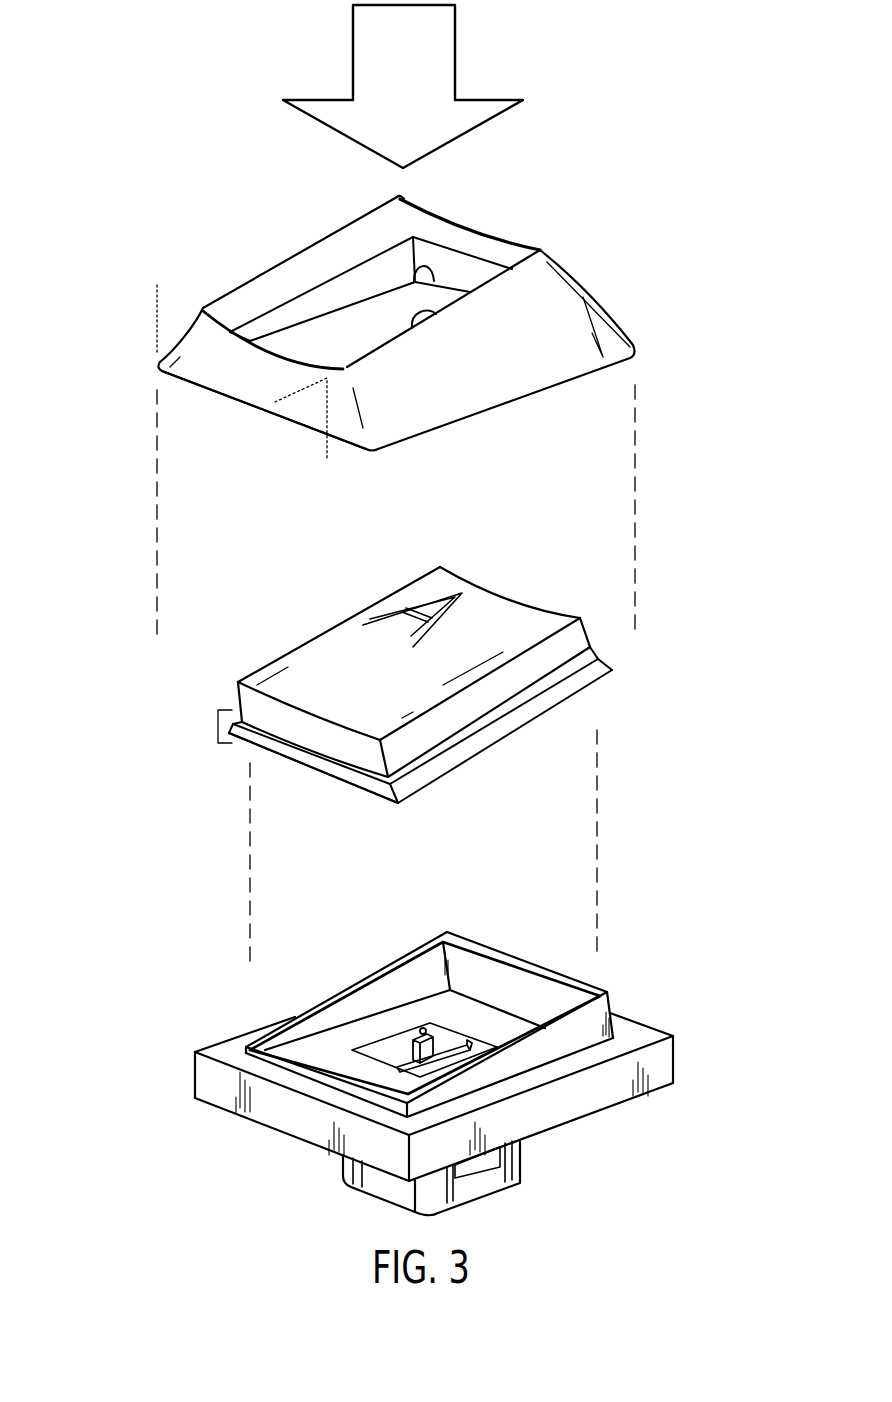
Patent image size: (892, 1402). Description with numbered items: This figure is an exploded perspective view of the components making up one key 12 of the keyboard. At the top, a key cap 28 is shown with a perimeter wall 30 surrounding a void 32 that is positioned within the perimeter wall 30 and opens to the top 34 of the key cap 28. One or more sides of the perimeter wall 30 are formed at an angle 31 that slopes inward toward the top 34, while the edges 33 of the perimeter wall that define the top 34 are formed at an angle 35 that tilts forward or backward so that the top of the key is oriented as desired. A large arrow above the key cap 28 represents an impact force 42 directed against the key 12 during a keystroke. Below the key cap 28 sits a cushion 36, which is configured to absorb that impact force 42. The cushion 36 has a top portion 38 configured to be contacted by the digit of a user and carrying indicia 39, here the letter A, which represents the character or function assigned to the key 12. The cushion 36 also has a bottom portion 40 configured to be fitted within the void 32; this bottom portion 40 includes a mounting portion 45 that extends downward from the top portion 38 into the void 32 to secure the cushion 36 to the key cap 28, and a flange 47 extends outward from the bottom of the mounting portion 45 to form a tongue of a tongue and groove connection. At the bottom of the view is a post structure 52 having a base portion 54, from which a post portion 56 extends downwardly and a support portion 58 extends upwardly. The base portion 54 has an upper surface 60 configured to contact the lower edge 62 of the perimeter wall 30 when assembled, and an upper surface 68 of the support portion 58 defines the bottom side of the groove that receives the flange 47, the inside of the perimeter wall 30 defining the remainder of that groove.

The key 12 is at (144, 98).
The key cap 28 is at (444, 318).
The perimeter wall 30 is at (500, 357).
The angle 31 is at (189, 325).
The void 32 is at (330, 336).
The edges 33 is at (431, 318).
The top 34 is at (489, 231).
The angle 35 is at (298, 398).
The cushion 36 is at (392, 686).
The top portion 38 is at (328, 623).
The indicia 39 is at (413, 610).
The bottom portion 40 is at (595, 699).
The impact force 42 is at (457, 32).
The mounting portion 45 is at (218, 722).
The flange 47 is at (321, 774).
The post structure 52 is at (394, 1070).
The base portion 54 is at (271, 1125).
The post portion 56 is at (488, 1192).
The support portion 58 is at (480, 1006).
The upper surface 60 is at (650, 1037).
The lower edge 62 is at (280, 420).
The upper surface 68 is at (514, 961).